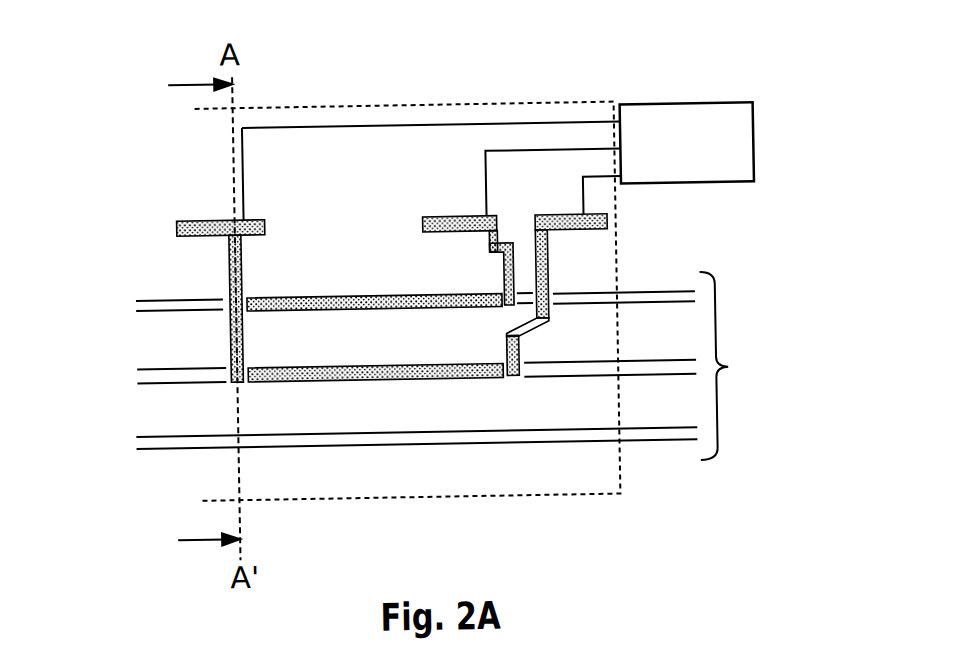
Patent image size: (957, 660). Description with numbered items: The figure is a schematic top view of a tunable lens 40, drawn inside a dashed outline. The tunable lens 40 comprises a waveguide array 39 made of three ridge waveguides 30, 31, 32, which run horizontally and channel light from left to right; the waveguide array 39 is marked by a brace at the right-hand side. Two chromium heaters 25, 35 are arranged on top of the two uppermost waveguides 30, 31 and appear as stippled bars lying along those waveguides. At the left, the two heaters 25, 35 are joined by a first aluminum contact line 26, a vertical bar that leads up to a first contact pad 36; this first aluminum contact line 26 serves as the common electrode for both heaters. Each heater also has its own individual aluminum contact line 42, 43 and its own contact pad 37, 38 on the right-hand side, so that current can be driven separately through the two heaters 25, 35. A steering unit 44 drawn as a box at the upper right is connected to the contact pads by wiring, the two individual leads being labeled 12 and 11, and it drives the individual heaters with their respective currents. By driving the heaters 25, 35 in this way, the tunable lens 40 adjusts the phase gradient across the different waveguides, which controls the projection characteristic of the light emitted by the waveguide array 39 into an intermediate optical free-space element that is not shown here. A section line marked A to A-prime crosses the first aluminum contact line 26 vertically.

The wiring line to steering unit 11 is at (602, 194).
The wiring line to steering unit 12 is at (553, 181).
The chromium heater 25 is at (391, 380).
The first aluminum contact line 26 is at (243, 267).
The ridge waveguide 30 is at (136, 303).
The ridge waveguide 31 is at (136, 374).
The ridge waveguide 32 is at (134, 442).
The chromium heater 35 is at (384, 295).
The first contact pad 36 is at (178, 226).
The contact pad 37 is at (546, 217).
The contact pad 38 is at (447, 217).
The waveguide array 39 is at (733, 365).
The tunable lens 40 is at (405, 497).
The individual aluminum contact line 42 is at (549, 277).
The individual aluminum contact line 43 is at (504, 275).
The steering unit 44 is at (756, 167).